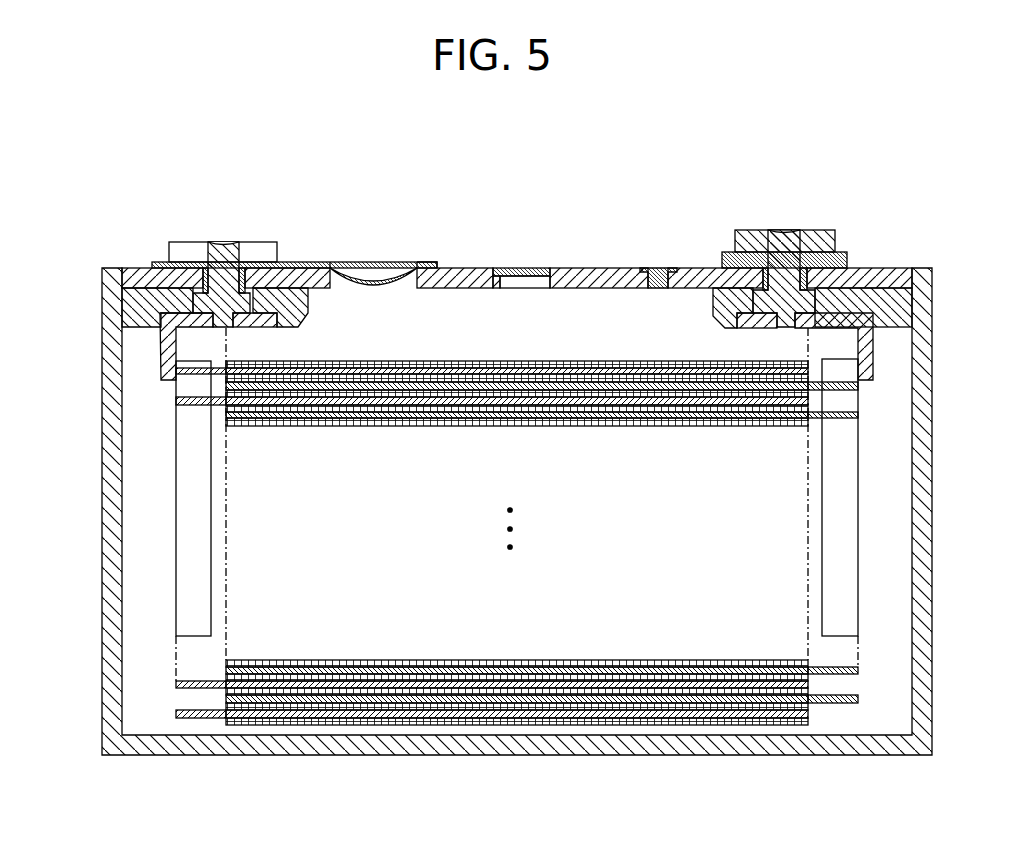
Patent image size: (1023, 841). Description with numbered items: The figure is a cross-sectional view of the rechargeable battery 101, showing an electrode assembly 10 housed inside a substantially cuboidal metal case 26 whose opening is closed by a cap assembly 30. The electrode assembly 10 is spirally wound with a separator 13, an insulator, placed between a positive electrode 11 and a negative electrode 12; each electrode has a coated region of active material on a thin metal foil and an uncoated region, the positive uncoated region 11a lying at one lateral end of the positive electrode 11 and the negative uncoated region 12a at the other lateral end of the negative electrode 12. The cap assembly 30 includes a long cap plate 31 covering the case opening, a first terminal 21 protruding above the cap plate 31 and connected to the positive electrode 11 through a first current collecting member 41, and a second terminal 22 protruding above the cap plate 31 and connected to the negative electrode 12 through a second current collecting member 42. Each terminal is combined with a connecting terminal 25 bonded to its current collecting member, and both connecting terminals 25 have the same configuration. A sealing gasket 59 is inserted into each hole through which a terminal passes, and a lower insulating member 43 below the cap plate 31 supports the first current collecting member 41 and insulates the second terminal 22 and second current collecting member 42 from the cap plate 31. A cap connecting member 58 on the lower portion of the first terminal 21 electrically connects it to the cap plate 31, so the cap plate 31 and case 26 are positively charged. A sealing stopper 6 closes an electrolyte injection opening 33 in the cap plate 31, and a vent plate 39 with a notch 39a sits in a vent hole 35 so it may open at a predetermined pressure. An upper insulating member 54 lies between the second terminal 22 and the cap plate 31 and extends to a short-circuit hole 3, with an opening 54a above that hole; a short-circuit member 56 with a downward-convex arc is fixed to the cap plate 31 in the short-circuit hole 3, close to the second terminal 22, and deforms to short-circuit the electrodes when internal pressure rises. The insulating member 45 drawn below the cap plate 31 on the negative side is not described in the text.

The rechargeable battery 101 is at (600, 137).
The electrode assembly 10 is at (516, 568).
The positive electrode 11 is at (712, 700).
The positive uncoated region 11a is at (838, 703).
The negative electrode 12 is at (317, 718).
The negative uncoated region 12a is at (188, 718).
The separator 13 is at (522, 692).
The first terminal 21 is at (815, 245).
The second terminal 22 is at (184, 250).
The connecting terminal 25 is at (228, 242).
The case 26 is at (921, 548).
The cap assembly 30 is at (603, 268).
The cap plate 31 is at (900, 280).
The electrolyte injection opening 33 is at (656, 289).
The vent hole 35 is at (522, 290).
The vent plate 39 is at (548, 270).
The notch 39a is at (522, 268).
The short-circuit hole 3 is at (346, 270).
The short-circuit member 56 is at (372, 283).
The upper insulating member 54 is at (292, 262).
The opening 54a is at (390, 265).
The cap connecting member 58 is at (847, 258).
The sealing gasket 59 is at (767, 279).
The sealing stopper 6 is at (658, 270).
The first current collecting member 41 is at (845, 398).
The second current collecting member 42 is at (190, 456).
The lower insulating member 43 is at (895, 300).
The negative lower insulating member 45 is at (140, 300).